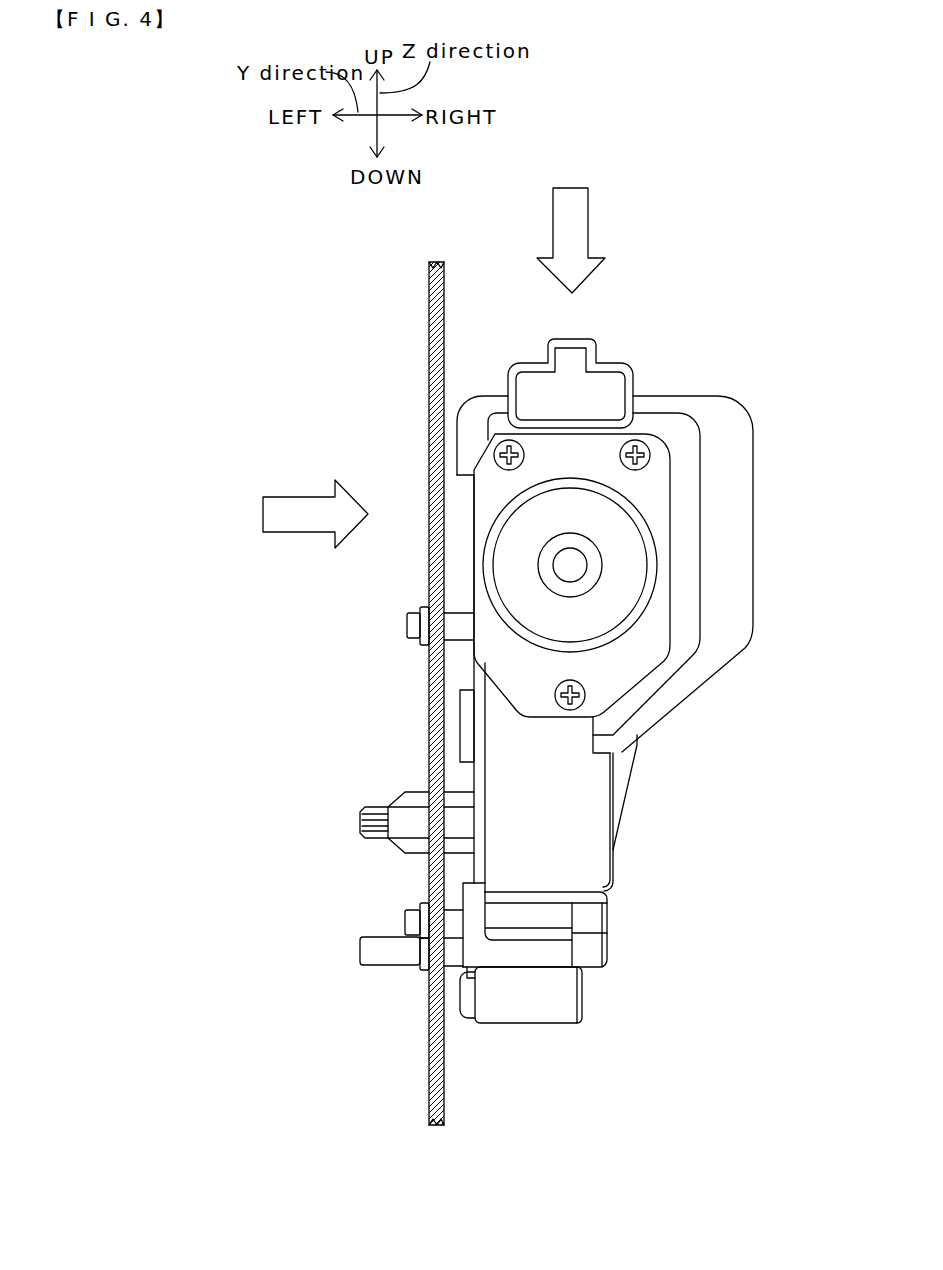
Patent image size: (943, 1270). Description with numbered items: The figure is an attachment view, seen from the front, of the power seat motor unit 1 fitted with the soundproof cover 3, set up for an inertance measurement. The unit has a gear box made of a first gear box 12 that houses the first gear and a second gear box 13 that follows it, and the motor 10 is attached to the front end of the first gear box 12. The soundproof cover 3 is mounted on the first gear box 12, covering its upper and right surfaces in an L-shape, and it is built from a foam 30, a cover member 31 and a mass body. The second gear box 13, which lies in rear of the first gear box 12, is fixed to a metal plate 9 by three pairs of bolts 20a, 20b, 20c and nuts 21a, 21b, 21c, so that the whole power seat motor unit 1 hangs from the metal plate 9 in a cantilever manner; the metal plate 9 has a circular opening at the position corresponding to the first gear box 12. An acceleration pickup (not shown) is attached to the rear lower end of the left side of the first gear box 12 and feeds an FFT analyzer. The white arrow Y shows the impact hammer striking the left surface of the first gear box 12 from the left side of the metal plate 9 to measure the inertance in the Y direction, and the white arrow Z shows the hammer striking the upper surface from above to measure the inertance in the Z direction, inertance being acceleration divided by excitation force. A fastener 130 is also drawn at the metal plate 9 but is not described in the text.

The power seat motor unit 1 is at (767, 327).
The soundproof cover 3 is at (730, 418).
The metal plate 9 is at (429, 347).
The motor 10 is at (622, 532).
The first gear box 12 is at (647, 652).
The second gear box 13 is at (588, 837).
The bolt 20a is at (408, 625).
The bolt 20b is at (407, 922).
The bolt 20c is at (363, 948).
The nut 21a is at (424, 645).
The nut 21b is at (425, 903).
The nut 21c is at (425, 968).
The foam 30 is at (658, 420).
The cover member 31 is at (742, 468).
The bolt 130 is at (412, 817).
The white arrow Y is at (308, 497).
The white arrow Z is at (590, 218).